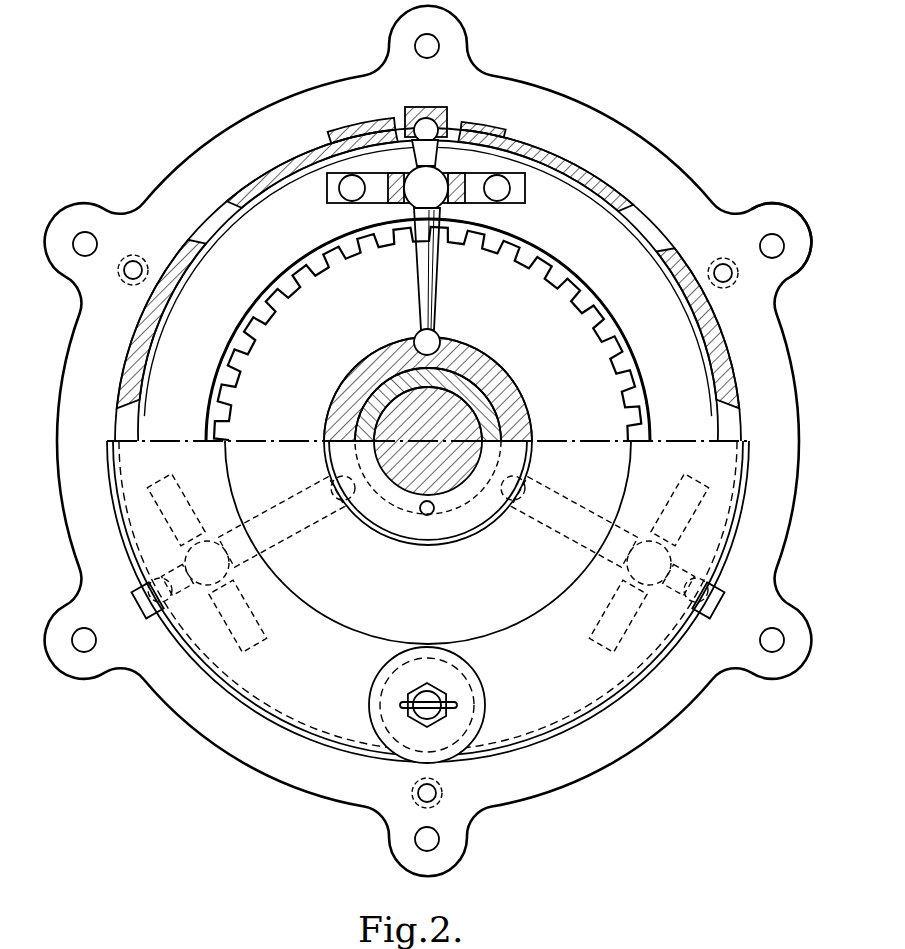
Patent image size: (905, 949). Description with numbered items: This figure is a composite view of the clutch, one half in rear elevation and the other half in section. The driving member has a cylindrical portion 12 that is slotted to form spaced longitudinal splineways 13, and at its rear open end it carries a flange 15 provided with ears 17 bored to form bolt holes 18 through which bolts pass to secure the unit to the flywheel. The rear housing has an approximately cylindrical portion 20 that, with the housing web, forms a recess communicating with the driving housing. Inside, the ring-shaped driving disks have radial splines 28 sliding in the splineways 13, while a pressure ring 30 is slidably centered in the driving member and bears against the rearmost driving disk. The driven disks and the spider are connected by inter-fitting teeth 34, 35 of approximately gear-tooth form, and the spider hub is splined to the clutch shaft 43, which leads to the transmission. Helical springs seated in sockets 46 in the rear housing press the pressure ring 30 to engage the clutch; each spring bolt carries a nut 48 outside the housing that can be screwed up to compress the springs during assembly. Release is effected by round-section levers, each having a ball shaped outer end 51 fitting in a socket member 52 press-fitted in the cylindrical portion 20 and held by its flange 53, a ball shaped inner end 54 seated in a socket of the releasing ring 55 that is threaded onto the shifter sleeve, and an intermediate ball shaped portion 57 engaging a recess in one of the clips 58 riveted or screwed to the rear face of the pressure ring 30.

The cylindrical portion 12 is at (580, 159).
The splineways 13 is at (628, 213).
The flange 15 is at (632, 152).
The ears 17 is at (793, 270).
The bolt holes 18 is at (777, 236).
The cylindrical portion of the rear housing 20 is at (474, 123).
The radial splines 28 is at (639, 223).
The pressure ring 30 is at (280, 252).
The teeth of the driven disks 34 is at (584, 298).
The teeth of the spider 35 is at (603, 333).
The clutch shaft 43 is at (412, 482).
The sockets 46 is at (482, 707).
The nut 48 is at (441, 688).
The ball shaped outer end 51 is at (432, 118).
The socket member 52 is at (407, 107).
The flange of the socket member 53 is at (452, 116).
The inner end of the lever 54 is at (438, 336).
The ring 55 is at (363, 370).
The ball shaped portion 57 is at (419, 248).
The clips 58 is at (360, 200).